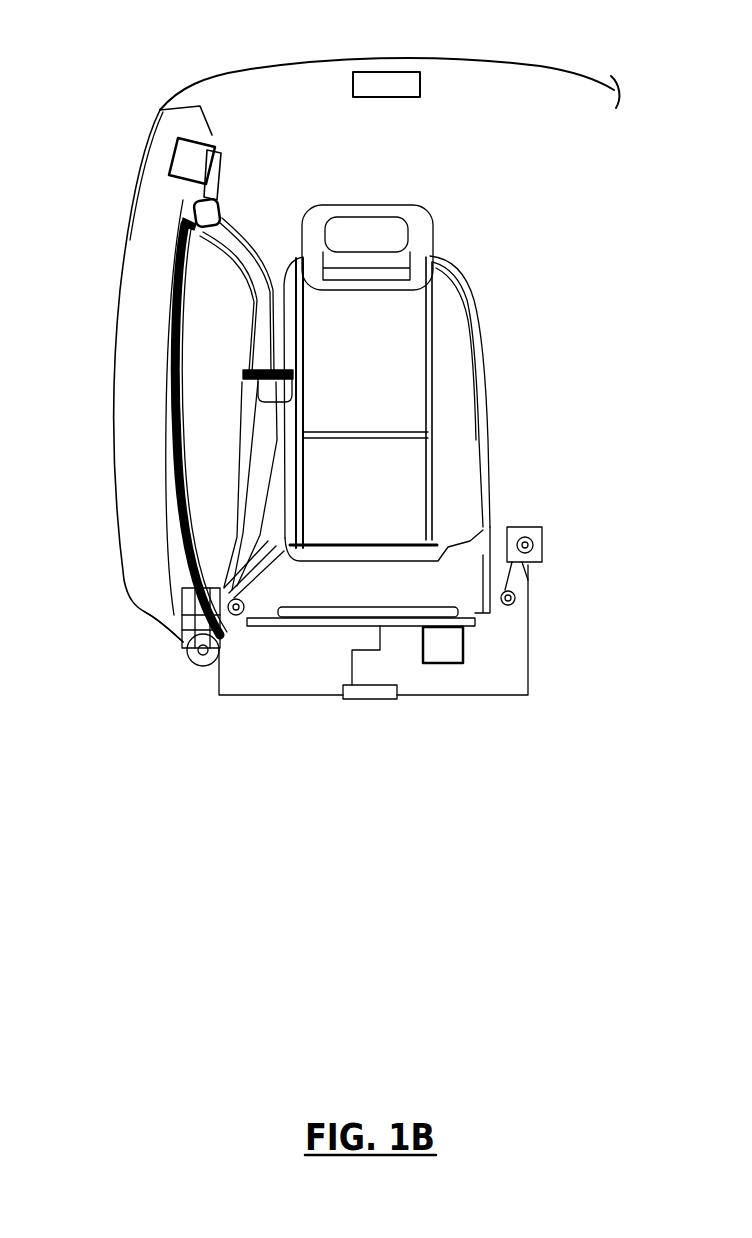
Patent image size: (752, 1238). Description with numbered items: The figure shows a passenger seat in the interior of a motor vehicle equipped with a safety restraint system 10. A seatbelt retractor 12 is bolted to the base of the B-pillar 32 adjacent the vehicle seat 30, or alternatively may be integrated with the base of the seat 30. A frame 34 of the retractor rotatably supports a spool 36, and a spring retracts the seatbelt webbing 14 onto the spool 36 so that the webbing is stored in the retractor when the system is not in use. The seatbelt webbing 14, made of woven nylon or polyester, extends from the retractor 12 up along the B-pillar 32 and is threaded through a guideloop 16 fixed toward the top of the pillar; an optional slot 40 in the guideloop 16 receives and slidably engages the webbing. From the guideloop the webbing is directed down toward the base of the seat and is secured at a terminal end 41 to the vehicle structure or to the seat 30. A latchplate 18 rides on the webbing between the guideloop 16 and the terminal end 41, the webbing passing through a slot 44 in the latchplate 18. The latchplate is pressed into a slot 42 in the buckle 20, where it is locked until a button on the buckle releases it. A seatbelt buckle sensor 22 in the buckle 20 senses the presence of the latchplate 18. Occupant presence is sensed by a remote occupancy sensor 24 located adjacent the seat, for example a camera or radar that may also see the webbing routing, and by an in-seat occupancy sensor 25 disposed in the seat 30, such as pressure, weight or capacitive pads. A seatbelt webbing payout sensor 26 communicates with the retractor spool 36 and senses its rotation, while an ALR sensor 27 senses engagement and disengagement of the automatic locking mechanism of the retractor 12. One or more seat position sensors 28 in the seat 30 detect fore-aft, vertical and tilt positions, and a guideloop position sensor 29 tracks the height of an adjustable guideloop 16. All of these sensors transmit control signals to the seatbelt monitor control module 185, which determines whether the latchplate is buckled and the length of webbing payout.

The safety restraint system 10 is at (276, 200).
The seatbelt retractor 12 is at (228, 628).
The seatbelt webbing 14 is at (167, 365).
The guideloop 16 is at (226, 168).
The latchplate 18 is at (252, 378).
The buckle 20 is at (548, 538).
The seatbelt buckle sensor 22 is at (532, 548).
The remote occupancy sensor 24 is at (388, 72).
The in-seat occupancy sensor 25 is at (483, 620).
The seatbelt webbing payout sensor 26 is at (221, 638).
The automatic locking retractor (ALR) sensor 27 is at (190, 635).
The seat position sensor 28 is at (445, 665).
The guideloop position sensor 29 is at (172, 157).
The vehicle seat 30 is at (474, 290).
The B-pillar 32 is at (128, 480).
The frame 34 is at (165, 626).
The spool 36 is at (172, 668).
The slot 40 is at (185, 221).
The terminal end 41 is at (246, 608).
The slot 42 is at (527, 525).
The slot 44 is at (306, 366).
The seatbelt monitor control module 185 is at (367, 703).